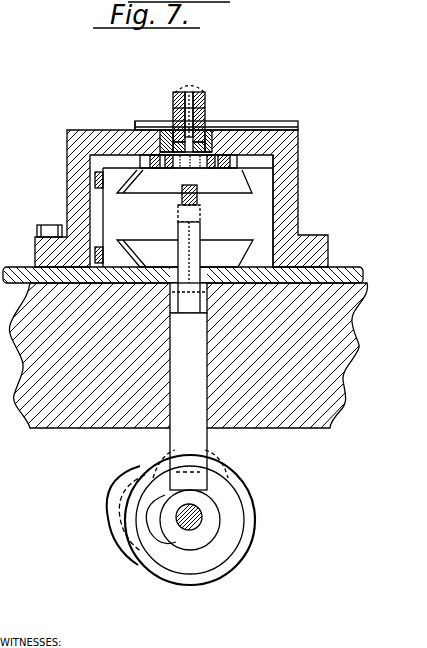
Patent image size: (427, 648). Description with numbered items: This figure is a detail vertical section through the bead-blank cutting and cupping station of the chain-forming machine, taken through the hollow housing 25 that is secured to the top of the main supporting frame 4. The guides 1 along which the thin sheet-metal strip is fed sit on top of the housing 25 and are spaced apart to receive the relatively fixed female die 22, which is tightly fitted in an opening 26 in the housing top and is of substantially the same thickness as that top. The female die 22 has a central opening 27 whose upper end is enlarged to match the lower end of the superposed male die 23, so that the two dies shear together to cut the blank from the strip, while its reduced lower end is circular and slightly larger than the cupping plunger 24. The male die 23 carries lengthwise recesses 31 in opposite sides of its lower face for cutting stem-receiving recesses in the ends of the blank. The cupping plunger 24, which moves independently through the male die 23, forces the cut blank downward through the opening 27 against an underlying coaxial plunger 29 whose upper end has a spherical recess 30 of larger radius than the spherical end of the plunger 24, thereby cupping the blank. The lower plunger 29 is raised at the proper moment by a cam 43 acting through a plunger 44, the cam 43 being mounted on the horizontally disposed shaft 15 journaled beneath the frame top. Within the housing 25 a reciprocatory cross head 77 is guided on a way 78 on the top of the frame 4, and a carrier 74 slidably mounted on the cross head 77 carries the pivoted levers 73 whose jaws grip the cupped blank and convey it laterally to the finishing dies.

The guide ways 1 is at (298, 125).
The main supporting frame 4 is at (338, 355).
The horizontally disposed shaft 15 is at (186, 530).
The female die 22 is at (230, 128).
The male die 23 is at (199, 91).
The cupping plunger 24 is at (190, 91).
The housing 25 is at (290, 181).
The opening 26 is at (298, 142).
The central opening 27 is at (134, 128).
The plunger 29 is at (199, 204).
The spherical recess 30 is at (181, 198).
The lengthwise recesses 31 is at (173, 108).
The cam 43 is at (235, 516).
The plunger 44 is at (176, 365).
The levers 73 is at (192, 165).
The carrier 74 is at (90, 183).
The cross head 77 is at (257, 218).
The way 78 is at (162, 253).